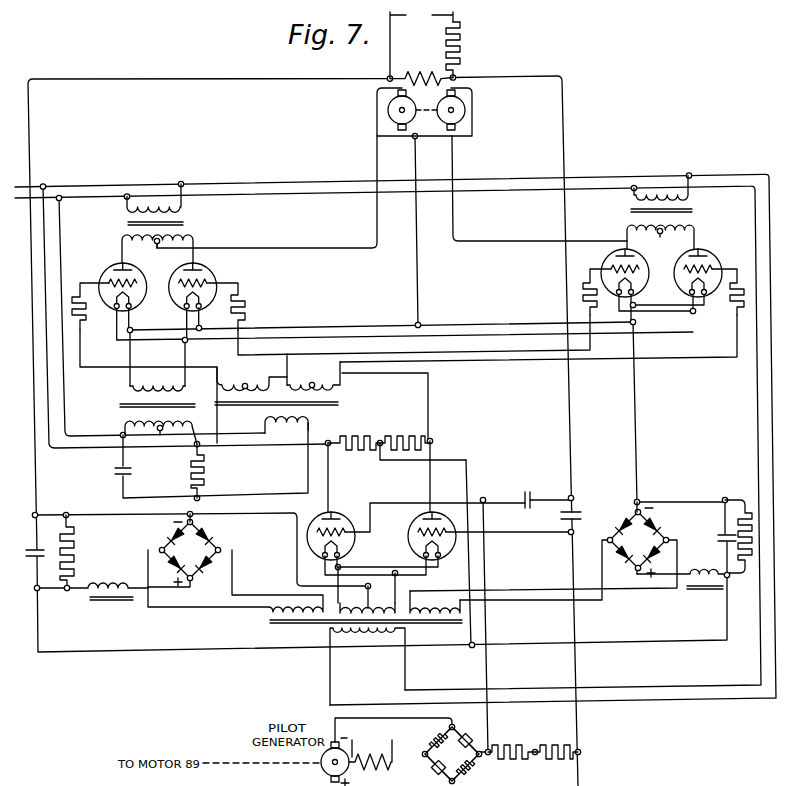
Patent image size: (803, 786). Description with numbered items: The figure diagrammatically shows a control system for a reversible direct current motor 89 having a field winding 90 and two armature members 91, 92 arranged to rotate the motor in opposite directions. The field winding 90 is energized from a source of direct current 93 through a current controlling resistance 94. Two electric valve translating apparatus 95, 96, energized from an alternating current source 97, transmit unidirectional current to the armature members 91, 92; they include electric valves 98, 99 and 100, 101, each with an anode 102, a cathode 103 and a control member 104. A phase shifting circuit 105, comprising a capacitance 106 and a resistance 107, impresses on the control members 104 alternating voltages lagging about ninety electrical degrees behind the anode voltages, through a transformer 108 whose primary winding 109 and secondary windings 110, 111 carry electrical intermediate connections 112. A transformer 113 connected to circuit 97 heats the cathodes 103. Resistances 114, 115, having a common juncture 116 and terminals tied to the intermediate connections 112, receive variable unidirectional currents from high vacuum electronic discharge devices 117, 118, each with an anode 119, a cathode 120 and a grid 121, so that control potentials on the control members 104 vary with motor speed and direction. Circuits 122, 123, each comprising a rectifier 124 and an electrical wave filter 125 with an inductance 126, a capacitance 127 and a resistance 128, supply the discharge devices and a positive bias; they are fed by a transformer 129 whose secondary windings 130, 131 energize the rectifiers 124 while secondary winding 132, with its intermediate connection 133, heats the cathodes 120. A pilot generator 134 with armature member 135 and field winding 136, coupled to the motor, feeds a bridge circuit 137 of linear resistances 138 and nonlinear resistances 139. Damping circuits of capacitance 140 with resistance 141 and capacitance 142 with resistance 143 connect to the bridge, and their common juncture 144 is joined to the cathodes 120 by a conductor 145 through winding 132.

The direct current motor 89 is at (435, 103).
The field winding 90 is at (424, 70).
The armature member 91 is at (399, 122).
The armature member 92 is at (462, 117).
The source of direct current 93 is at (421, 44).
The current controlling resistance 94 is at (458, 45).
The electric valve translating apparatus 95 is at (248, 236).
The electric valve translating apparatus 96 is at (612, 226).
The source of alternating current 97 is at (87, 198).
The electric valve 98 is at (113, 266).
The electric valve 99 is at (180, 267).
The electric valve 100 is at (641, 260).
The electric valve 101 is at (712, 260).
The anode 102 is at (206, 265).
The cathode 103 is at (185, 308).
The control member 104 is at (178, 284).
The phase shifting circuit 105 is at (168, 478).
The capacitance 106 is at (112, 472).
The resistance 107 is at (205, 471).
The transformer 108 is at (340, 404).
The primary winding 109 is at (286, 430).
The secondary winding 110 is at (252, 378).
The secondary winding 111 is at (313, 375).
The electrical intermediate connection 112 is at (245, 383).
The transformer 113 is at (118, 407).
The resistance 114 is at (359, 436).
The resistance 115 is at (402, 436).
The common juncture 116 is at (379, 448).
The electronic discharge device 117 is at (349, 522).
The electronic discharge device 118 is at (440, 517).
The anode 119 is at (323, 522).
The cathode 120 is at (350, 553).
The grid 121 is at (368, 579).
The circuit 122 is at (127, 637).
The circuit 123 is at (674, 628).
The rectifier 124 is at (199, 559).
The electrical wave filter 125 is at (104, 561).
The inductance 126 is at (121, 588).
The capacitance 127 is at (29, 549).
The resistance 128 is at (77, 529).
The transformer 129 is at (266, 629).
The secondary winding 130 is at (235, 581).
The secondary winding 131 is at (436, 619).
The secondary winding 132 is at (367, 601).
The electrical intermediate connection 133 is at (382, 597).
The pilot generator 134 is at (305, 779).
The armature member 135 is at (319, 757).
The field winding 136 is at (371, 751).
The bridge circuit 137 is at (459, 761).
The linear resistance 138 is at (436, 741).
The nonlinear resistance 139 is at (466, 738).
The capacitance 140 is at (527, 492).
The resistance 141 is at (512, 745).
The capacitance 142 is at (584, 516).
The resistance 143 is at (553, 745).
The common juncture 144 is at (536, 779).
The conductor 145 is at (537, 670).